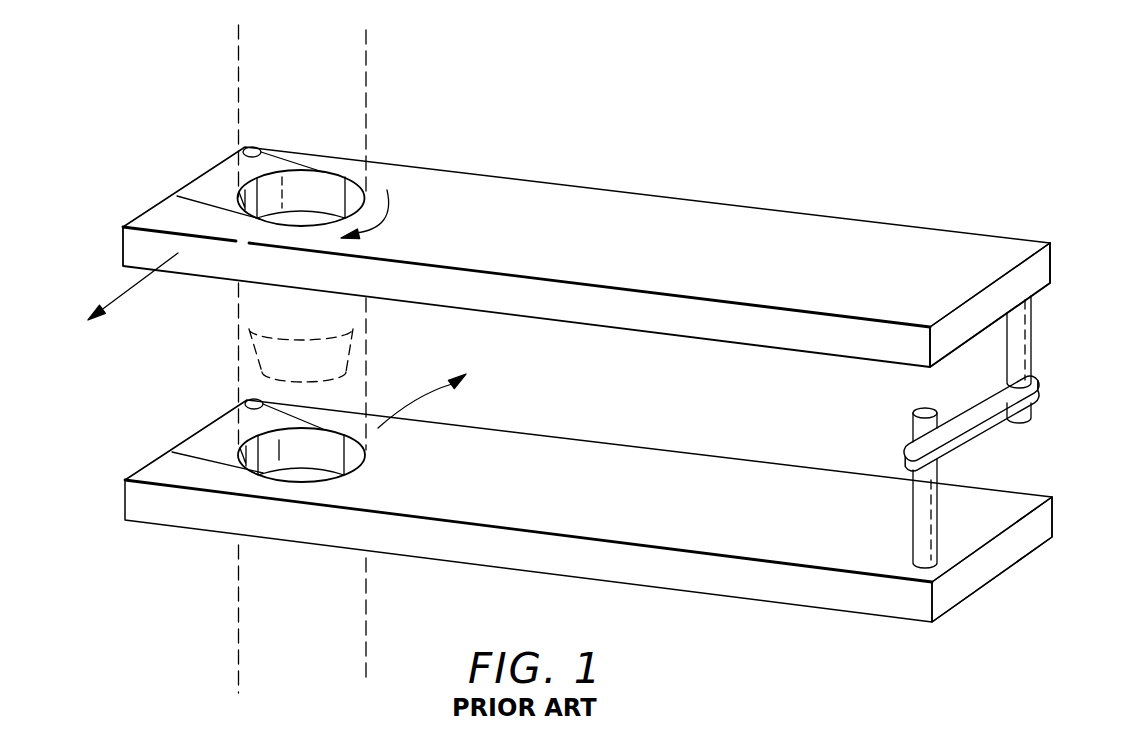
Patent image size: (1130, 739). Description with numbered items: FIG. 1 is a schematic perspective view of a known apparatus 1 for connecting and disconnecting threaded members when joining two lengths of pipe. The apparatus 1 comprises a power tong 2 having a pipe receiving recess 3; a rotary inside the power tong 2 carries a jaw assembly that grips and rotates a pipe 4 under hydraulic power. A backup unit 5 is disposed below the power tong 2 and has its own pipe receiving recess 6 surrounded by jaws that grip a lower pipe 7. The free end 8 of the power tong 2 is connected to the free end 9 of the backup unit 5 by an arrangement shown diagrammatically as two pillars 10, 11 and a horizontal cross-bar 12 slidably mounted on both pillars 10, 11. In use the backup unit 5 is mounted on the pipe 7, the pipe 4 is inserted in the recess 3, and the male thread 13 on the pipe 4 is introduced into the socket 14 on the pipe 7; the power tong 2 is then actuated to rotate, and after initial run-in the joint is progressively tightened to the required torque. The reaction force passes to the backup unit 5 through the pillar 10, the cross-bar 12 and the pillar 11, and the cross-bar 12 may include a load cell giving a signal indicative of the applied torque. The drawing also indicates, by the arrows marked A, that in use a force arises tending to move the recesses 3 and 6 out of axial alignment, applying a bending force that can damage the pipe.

The apparatus 1 is at (581, 368).
The power tong 2 is at (533, 205).
The pipe receiving recess 3 is at (257, 177).
The pipe 4 is at (272, 88).
The backup unit 5 is at (593, 562).
The pipe receiving recess 6 is at (240, 431).
The pipe 7 is at (272, 620).
The free end 8 is at (1035, 273).
The free end 9 is at (973, 575).
The pillar 10 is at (1017, 337).
The pillar 11 is at (922, 525).
The cross-bar 12 is at (968, 423).
The male thread 13 is at (333, 347).
The socket 14 is at (253, 352).